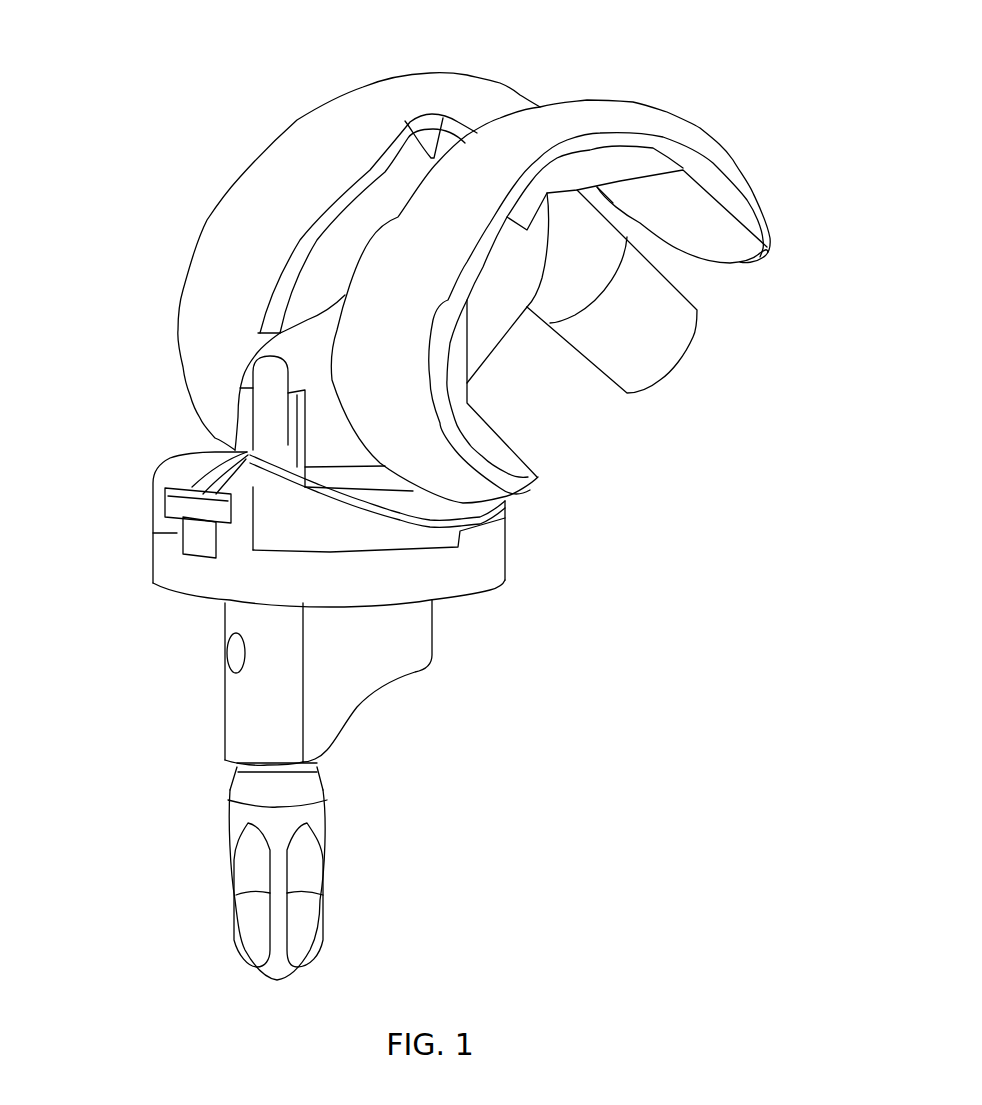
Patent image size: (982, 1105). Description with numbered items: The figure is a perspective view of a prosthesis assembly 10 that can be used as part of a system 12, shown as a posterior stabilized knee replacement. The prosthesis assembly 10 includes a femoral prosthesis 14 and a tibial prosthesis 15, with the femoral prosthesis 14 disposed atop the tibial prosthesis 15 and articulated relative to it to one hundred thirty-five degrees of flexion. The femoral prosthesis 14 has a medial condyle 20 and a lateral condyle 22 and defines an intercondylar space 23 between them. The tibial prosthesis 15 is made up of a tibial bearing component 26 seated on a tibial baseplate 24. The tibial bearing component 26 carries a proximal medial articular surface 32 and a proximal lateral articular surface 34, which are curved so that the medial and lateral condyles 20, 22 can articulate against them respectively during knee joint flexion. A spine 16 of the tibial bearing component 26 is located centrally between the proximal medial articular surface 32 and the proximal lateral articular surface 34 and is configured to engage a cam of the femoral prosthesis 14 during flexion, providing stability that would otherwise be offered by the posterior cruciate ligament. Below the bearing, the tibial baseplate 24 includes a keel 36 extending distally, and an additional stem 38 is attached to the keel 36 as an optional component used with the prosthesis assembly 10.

The prosthesis assembly 10 is at (215, 54).
The system 12 is at (701, 124).
The femoral prosthesis 14 is at (268, 140).
The tibial prosthesis 15 is at (166, 603).
The spine 16 is at (262, 355).
The medial condyle 20 is at (240, 197).
The lateral condyle 22 is at (400, 230).
The intercondylar space 23 is at (345, 259).
The tibial baseplate 24 is at (487, 563).
The tibial bearing component 26 is at (237, 533).
The proximal medial articular surface 32 is at (193, 452).
The proximal lateral articular surface 34 is at (403, 505).
The keel 36 is at (240, 708).
The stem 38 is at (243, 878).